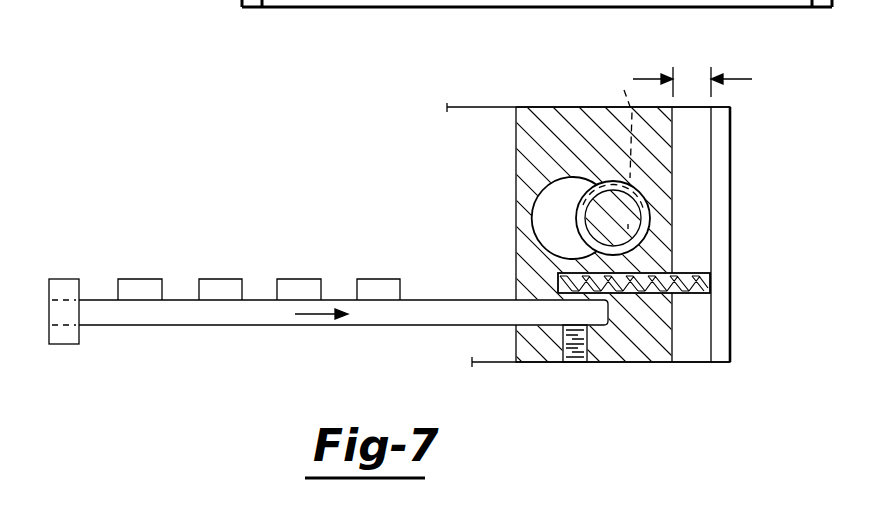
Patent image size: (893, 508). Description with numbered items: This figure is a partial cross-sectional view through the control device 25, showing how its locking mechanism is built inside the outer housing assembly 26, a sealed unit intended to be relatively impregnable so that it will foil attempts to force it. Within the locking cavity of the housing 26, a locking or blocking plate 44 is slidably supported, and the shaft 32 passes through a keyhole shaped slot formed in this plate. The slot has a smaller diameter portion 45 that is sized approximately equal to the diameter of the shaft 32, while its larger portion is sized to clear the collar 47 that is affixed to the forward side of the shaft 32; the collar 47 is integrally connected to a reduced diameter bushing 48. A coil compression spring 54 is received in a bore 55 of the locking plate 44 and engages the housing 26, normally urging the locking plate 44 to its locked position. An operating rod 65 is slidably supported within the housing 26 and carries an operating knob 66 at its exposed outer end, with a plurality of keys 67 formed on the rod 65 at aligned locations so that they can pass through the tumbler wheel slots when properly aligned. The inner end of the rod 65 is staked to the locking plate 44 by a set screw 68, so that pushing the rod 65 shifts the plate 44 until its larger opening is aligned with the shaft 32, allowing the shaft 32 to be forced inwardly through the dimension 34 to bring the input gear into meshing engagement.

The control device 25 is at (768, 127).
The outer housing assembly 26 is at (731, 117).
The shaft 32 is at (648, 232).
The dimension line 34 is at (692, 76).
The locking plate 44 is at (531, 107).
The smaller diameter portion 45 is at (613, 152).
The collar 47 is at (645, 194).
The reduced diameter bushing 48 is at (535, 222).
The coil compression spring 54 is at (665, 274).
The bore 55 is at (666, 293).
The operating rod 65 is at (121, 316).
The operating knob 66 is at (76, 346).
The keys 67 is at (199, 279).
The set screw 68 is at (619, 363).